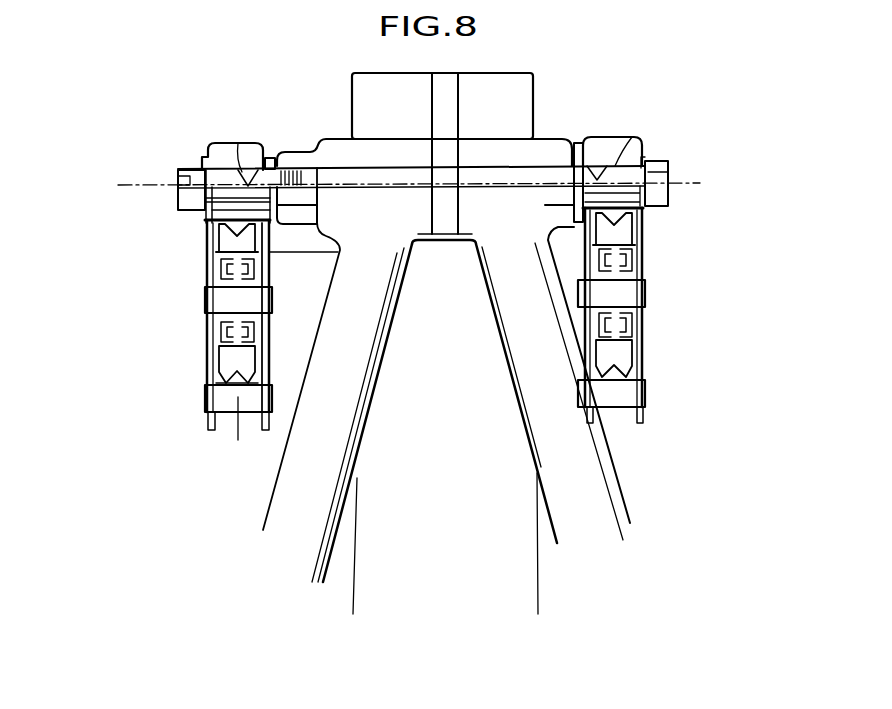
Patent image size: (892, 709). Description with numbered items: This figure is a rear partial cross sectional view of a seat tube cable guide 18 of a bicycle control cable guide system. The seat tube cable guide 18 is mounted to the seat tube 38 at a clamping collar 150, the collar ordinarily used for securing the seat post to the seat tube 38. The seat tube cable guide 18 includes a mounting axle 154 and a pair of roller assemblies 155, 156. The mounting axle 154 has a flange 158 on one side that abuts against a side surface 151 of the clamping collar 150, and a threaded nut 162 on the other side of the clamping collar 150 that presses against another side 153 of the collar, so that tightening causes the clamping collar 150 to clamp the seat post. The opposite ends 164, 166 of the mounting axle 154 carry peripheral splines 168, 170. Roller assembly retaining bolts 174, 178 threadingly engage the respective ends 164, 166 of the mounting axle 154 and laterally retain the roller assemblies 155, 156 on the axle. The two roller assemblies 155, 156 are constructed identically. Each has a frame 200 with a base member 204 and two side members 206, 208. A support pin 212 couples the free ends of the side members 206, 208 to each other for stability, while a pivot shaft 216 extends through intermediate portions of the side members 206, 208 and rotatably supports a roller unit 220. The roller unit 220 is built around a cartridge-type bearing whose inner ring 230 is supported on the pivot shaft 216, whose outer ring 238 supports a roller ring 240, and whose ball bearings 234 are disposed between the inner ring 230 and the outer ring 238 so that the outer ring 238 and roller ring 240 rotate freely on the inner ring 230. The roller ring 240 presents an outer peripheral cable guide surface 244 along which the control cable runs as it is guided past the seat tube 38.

The seat tube cable guide 18 is at (162, 169).
The seat tube 38 is at (452, 402).
The clamping collar 150 is at (323, 139).
The side surface of clamping collar 151 is at (563, 206).
The another side of clamping collar 153 is at (318, 210).
The mounting axle 154 is at (388, 174).
The roller assembly 155 is at (194, 428).
The roller assembly 156 is at (662, 397).
The flange 158 is at (582, 143).
The threaded nut 162 is at (293, 151).
The end of mounting axle 164 is at (233, 142).
The end of mounting axle 166 is at (634, 139).
The peripheral splines 168 is at (213, 213).
The peripheral splines 170 is at (648, 212).
The roller assembly retaining bolt 174 is at (182, 201).
The roller assembly retaining bolt 178 is at (672, 192).
The frame 200 is at (233, 362).
The base member 204 is at (235, 142).
The side member 206 is at (213, 367).
The side member 208 is at (267, 343).
The support pin 212 is at (235, 437).
The pivot shaft 216 is at (252, 297).
The roller unit 220 is at (340, 249).
The inner ring 230 is at (227, 317).
The ball bearings 234 is at (218, 328).
The outer ring 238 is at (215, 337).
The roller ring 240 is at (243, 352).
The cable guide surface 244 is at (243, 390).